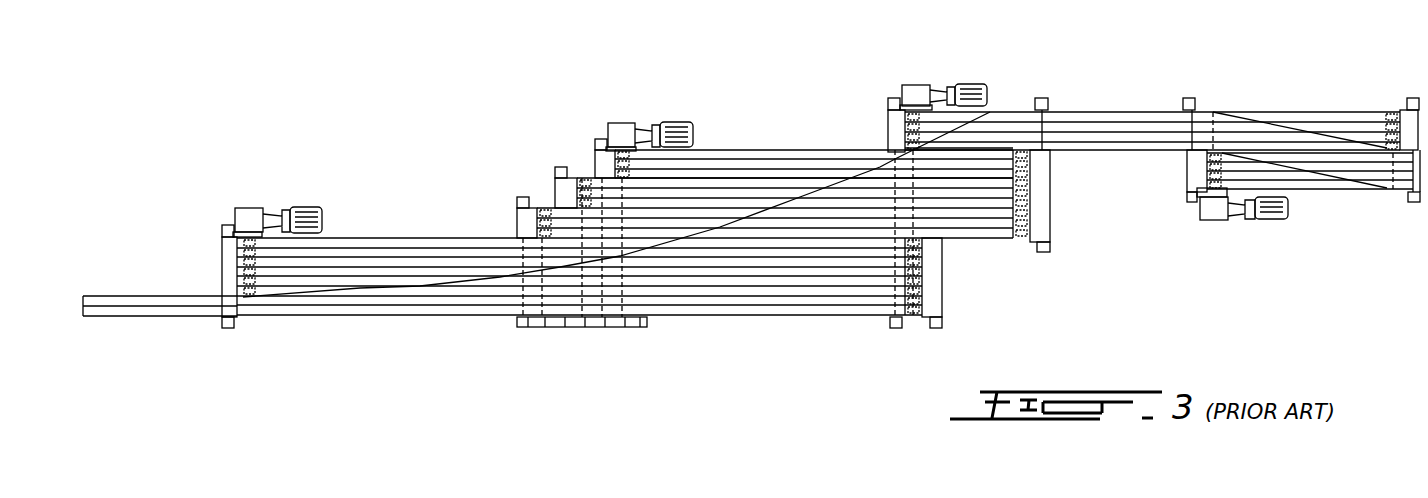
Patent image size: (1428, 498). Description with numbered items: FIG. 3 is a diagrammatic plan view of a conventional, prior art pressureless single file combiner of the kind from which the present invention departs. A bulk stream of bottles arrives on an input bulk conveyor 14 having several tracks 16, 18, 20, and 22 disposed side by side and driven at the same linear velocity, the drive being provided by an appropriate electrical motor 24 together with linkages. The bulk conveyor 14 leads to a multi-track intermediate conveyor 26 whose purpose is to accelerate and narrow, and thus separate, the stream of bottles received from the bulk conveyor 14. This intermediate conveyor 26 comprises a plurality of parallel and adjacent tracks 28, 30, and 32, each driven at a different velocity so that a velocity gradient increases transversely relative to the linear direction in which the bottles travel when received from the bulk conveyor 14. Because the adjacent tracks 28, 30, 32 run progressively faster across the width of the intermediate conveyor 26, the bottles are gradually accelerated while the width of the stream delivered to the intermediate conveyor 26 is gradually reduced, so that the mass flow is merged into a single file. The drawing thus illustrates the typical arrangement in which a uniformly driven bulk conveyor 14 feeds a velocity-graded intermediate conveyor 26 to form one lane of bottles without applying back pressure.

The input bulk conveyor 14 is at (1100, 153).
The track 16 is at (1067, 117).
The track 18 is at (1095, 125).
The track 20 is at (1113, 138).
The track 22 is at (1150, 147).
The electrical motor 24 is at (940, 92).
The intermediate conveyor 26 is at (792, 316).
The track 28 is at (727, 150).
The track 30 is at (763, 163).
The track 32 is at (798, 173).